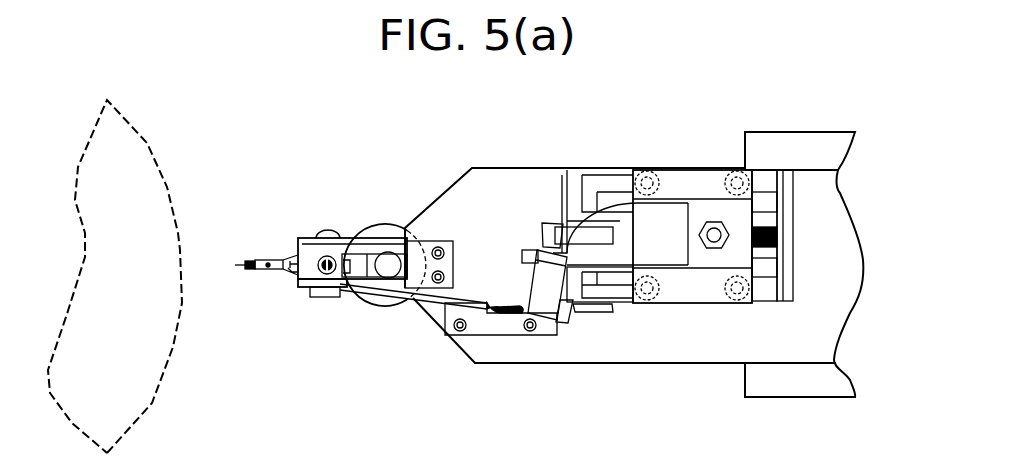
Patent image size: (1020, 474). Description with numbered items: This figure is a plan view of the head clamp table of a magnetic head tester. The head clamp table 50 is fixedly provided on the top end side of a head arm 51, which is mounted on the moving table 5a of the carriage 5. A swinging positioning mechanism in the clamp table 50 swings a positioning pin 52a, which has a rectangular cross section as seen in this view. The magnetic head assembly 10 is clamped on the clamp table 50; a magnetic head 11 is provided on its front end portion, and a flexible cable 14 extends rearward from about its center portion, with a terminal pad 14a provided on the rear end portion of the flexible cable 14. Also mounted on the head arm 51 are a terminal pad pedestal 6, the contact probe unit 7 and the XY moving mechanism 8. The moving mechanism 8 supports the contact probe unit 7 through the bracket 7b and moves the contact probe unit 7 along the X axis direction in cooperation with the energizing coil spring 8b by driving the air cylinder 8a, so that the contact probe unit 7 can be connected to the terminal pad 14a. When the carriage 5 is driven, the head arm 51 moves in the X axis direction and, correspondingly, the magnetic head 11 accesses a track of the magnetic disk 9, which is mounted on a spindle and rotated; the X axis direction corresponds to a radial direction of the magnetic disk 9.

The carriage 5 is at (650, 245).
The moving table 5a is at (796, 145).
The terminal pad pedestal 6 is at (478, 315).
The contact probe unit 7 is at (547, 286).
The bracket 7b is at (657, 258).
The XY moving mechanism 8 is at (670, 217).
The air cylinder 8a is at (577, 230).
The energizing coil spring 8b is at (780, 236).
The magnetic disk 9 is at (143, 143).
The magnetic head assembly 10 is at (270, 236).
The magnetic head 11 is at (254, 270).
The flexible cable 14 is at (436, 290).
The terminal pad 14a is at (507, 304).
The head clamp table 50 is at (361, 220).
The head arm 51 is at (503, 177).
The positioning pin 52a is at (318, 264).